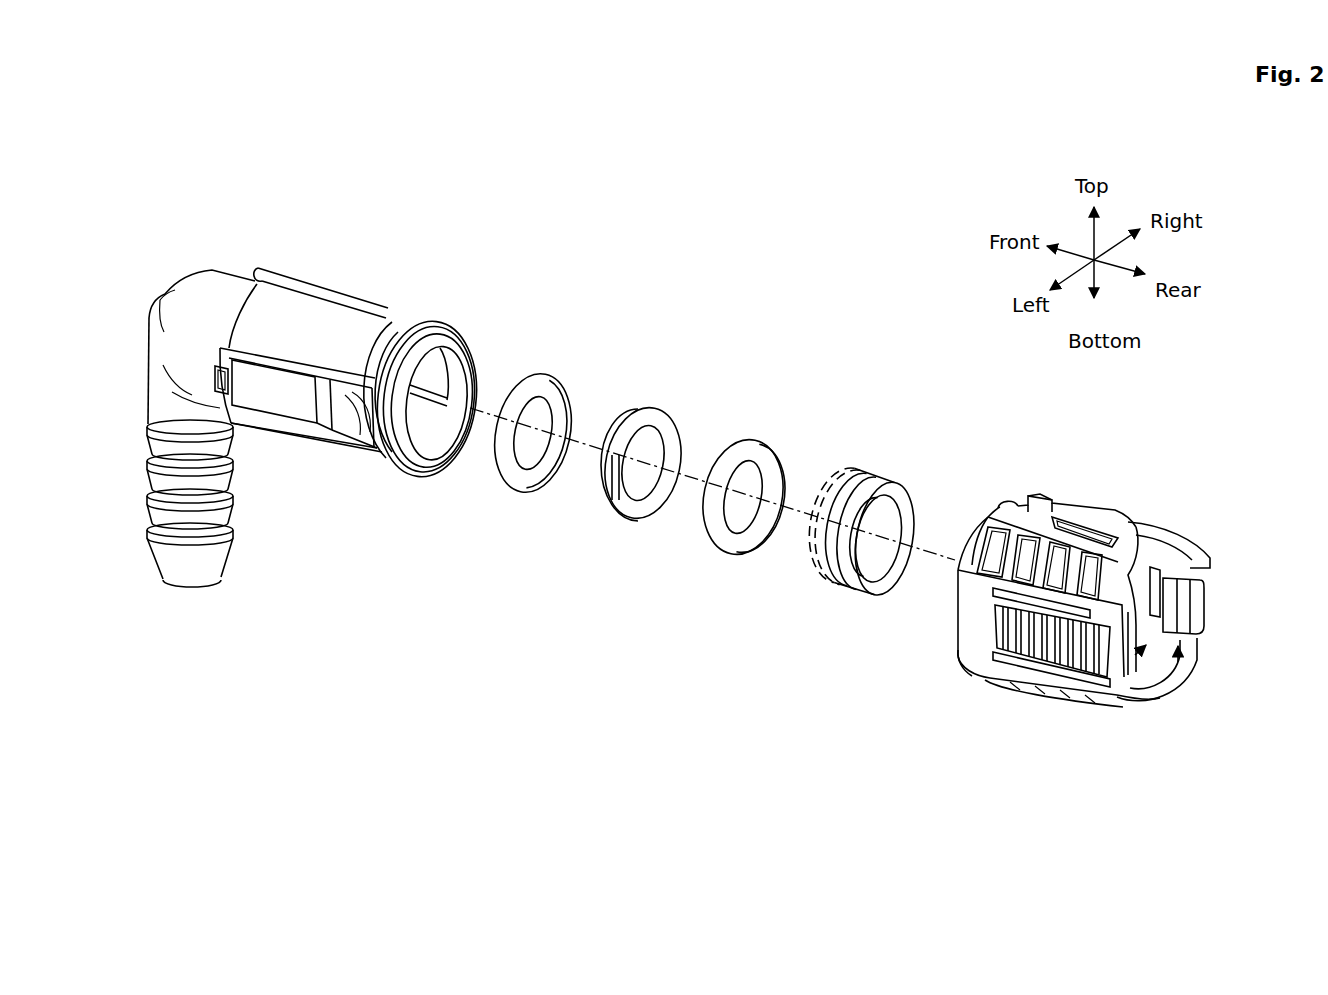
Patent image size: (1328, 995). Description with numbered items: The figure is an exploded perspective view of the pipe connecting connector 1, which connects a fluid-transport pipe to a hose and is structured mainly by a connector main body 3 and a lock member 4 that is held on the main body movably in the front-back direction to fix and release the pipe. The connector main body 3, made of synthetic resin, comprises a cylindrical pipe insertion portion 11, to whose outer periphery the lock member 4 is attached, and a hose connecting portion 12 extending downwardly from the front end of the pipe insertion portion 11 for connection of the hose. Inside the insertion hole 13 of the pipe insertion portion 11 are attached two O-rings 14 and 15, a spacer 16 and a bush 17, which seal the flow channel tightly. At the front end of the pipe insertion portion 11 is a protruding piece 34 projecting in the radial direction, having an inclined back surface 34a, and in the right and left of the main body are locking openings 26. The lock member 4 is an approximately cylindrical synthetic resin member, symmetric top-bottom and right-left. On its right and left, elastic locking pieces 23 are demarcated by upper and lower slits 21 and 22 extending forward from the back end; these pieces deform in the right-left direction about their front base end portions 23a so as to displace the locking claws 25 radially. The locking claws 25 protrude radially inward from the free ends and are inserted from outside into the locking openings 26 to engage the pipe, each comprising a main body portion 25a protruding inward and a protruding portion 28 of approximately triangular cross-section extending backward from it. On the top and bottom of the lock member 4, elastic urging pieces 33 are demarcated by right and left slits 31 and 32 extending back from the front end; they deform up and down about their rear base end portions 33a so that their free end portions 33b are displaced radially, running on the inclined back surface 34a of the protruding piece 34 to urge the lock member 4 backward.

The pipe connecting connector 1 is at (833, 282).
The connector main body 3 is at (331, 263).
The lock member 4 is at (1119, 506).
The pipe insertion portion 11 is at (408, 322).
The hose connecting portion 12 is at (222, 560).
The insertion hole 13 is at (425, 457).
The O-ring 14 is at (553, 373).
The O-ring 15 is at (766, 438).
The spacer 16 is at (669, 408).
The bush 17 is at (889, 476).
The upper slit 21 is at (1040, 608).
The lower slit 22 is at (1045, 672).
The elastic locking piece 23 is at (1078, 676).
The base end portion 23a is at (992, 623).
The locking claw 25 is at (1178, 664).
The main body portion 25a is at (1198, 576).
The locking opening 26 is at (446, 376).
The protruding portion 28 is at (1205, 601).
The right slit 31 is at (1046, 497).
The left slit 32 is at (997, 508).
The elastic urging piece 33 is at (1036, 500).
The base end portion 33a is at (1074, 503).
The free end portion 33b is at (1006, 497).
The protruding piece 34 is at (258, 266).
The inclined back surface 34a is at (258, 270).